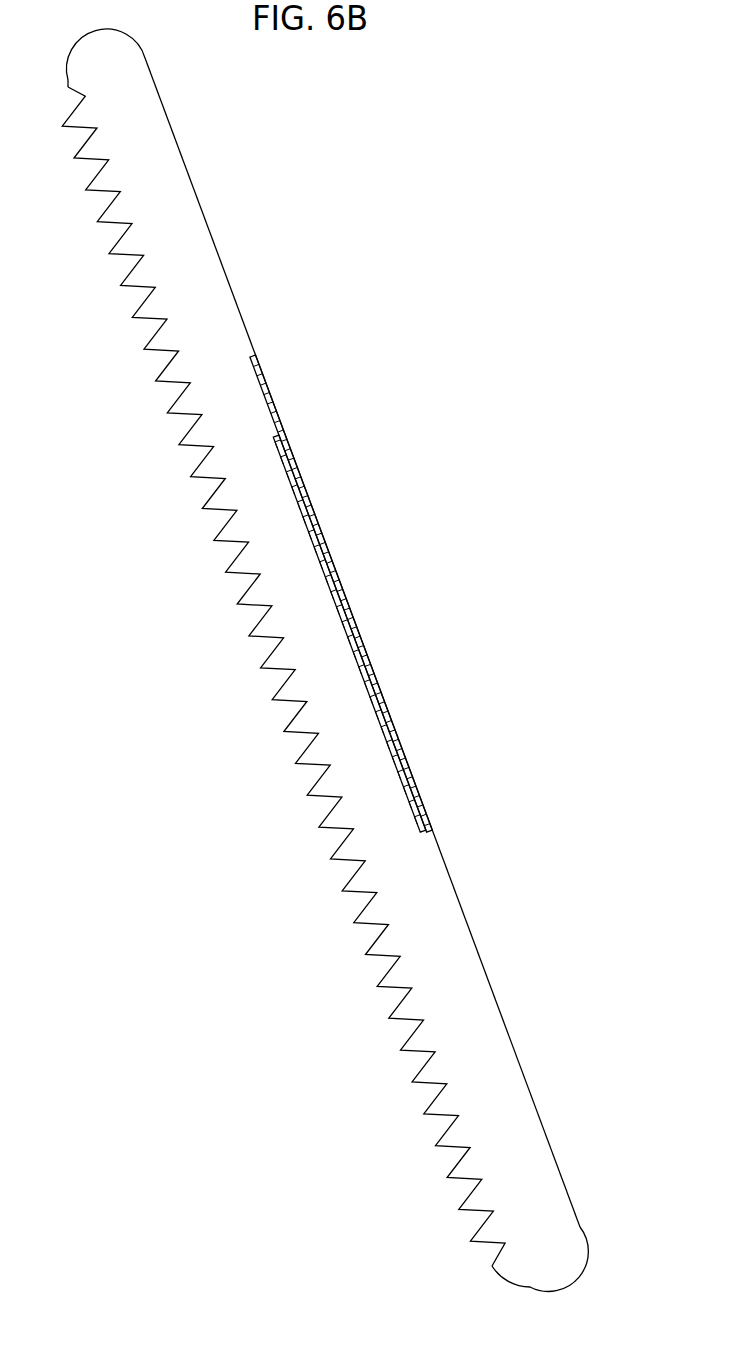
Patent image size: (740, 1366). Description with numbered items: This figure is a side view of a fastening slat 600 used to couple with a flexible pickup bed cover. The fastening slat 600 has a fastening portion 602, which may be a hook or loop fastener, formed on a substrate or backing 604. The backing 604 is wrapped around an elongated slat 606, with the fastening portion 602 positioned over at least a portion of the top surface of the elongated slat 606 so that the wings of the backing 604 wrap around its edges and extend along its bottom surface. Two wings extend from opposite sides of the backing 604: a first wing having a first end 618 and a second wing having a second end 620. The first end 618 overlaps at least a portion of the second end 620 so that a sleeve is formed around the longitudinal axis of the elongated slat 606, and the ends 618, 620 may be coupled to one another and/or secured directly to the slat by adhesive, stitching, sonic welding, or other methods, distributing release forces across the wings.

The fastening slat 600 is at (363, 660).
The fastening portion 602 is at (297, 765).
The backing 604 is at (475, 945).
The elongated slat 606 is at (338, 660).
The first end 618 is at (340, 545).
The second end 620 is at (325, 600).